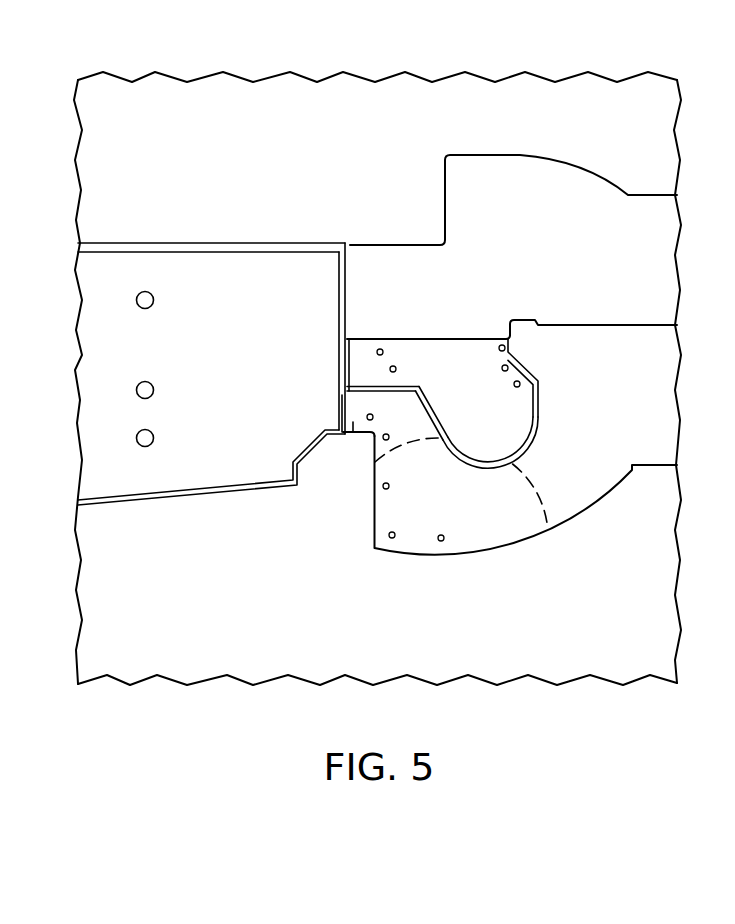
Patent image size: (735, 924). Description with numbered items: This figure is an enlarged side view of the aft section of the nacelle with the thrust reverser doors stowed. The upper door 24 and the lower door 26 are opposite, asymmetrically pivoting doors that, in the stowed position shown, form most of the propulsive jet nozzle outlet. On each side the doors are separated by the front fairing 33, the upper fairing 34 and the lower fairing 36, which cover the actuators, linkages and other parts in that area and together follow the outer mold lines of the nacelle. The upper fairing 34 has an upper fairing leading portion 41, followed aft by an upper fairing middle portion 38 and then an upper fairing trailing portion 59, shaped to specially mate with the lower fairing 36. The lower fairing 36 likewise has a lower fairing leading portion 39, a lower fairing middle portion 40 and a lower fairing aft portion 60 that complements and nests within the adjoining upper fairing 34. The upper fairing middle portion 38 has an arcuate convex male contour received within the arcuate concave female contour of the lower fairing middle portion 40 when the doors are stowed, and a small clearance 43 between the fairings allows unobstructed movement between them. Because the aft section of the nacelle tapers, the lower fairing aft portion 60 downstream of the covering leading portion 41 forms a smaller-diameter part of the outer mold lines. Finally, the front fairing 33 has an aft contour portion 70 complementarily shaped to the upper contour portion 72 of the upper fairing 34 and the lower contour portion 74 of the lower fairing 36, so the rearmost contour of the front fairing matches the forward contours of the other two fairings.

The upper door 24 is at (512, 97).
The lower door 26 is at (523, 662).
The front fairing 33 is at (83, 357).
The upper fairing 34 is at (437, 348).
The lower fairing 36 is at (488, 532).
The upper fairing middle portion 38 is at (527, 453).
The lower fairing leading portion 39 is at (353, 403).
The lower fairing middle portion 40 is at (515, 467).
The upper fairing leading portion 41 is at (357, 365).
The clearance 43 is at (447, 448).
The upper fairing trailing portion 59 is at (522, 405).
The lower fairing aft portion 60 is at (560, 363).
The aft contour portion 70 is at (283, 270).
The upper contour portion 72 is at (353, 287).
The lower contour portion 74 is at (353, 432).